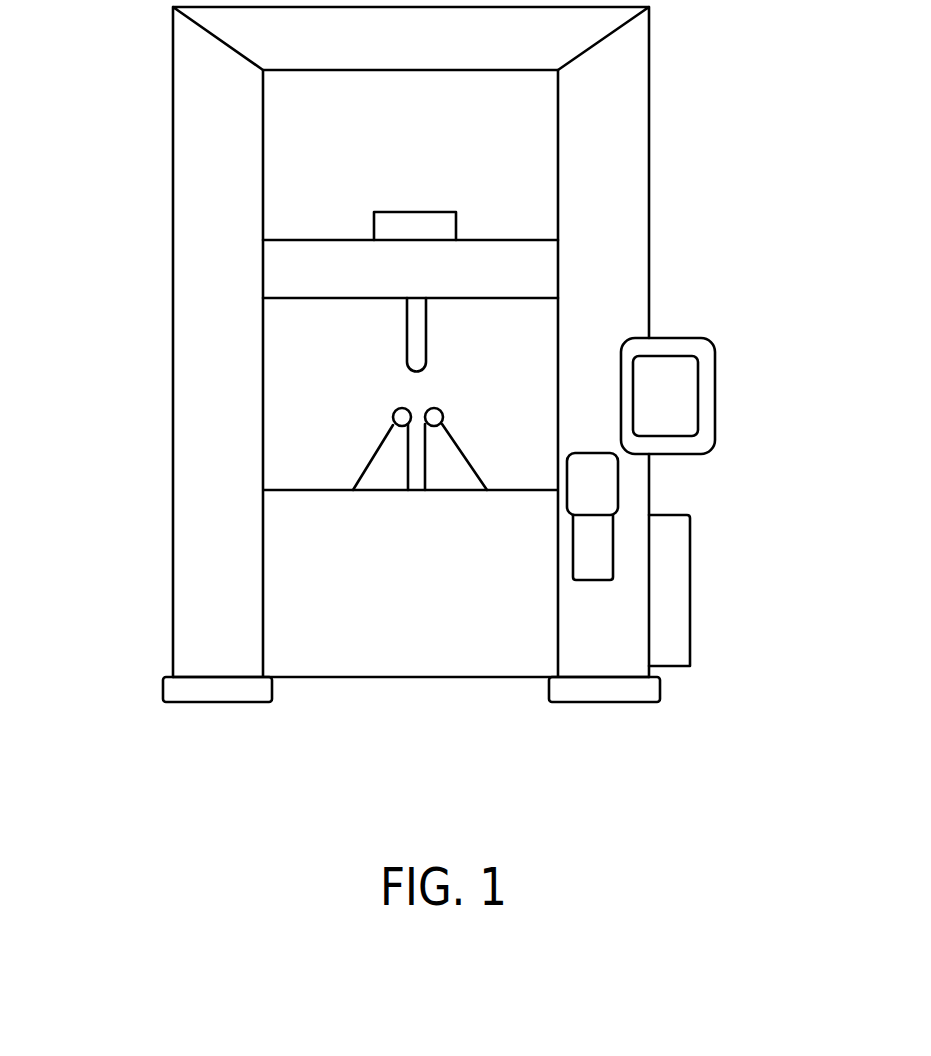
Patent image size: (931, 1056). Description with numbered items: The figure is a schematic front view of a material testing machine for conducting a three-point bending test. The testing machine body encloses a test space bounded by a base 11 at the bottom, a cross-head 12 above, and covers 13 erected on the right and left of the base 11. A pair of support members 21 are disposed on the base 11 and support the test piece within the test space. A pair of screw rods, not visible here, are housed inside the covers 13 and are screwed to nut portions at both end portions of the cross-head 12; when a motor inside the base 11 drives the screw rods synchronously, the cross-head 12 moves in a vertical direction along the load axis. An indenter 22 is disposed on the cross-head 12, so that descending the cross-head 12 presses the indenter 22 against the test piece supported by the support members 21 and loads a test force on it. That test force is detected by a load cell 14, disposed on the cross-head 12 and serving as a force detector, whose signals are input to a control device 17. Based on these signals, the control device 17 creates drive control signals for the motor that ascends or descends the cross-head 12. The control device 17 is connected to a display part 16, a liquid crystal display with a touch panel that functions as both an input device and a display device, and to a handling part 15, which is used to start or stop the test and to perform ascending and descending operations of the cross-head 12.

The base 11 is at (355, 627).
The cross-head 12 is at (325, 270).
The covers 13 is at (230, 237).
The load cell 14 is at (408, 227).
The handling part 15 is at (590, 495).
The display part 16 is at (667, 390).
The control device 17 is at (668, 543).
The support members 21 is at (398, 431).
The indenter 22 is at (409, 363).